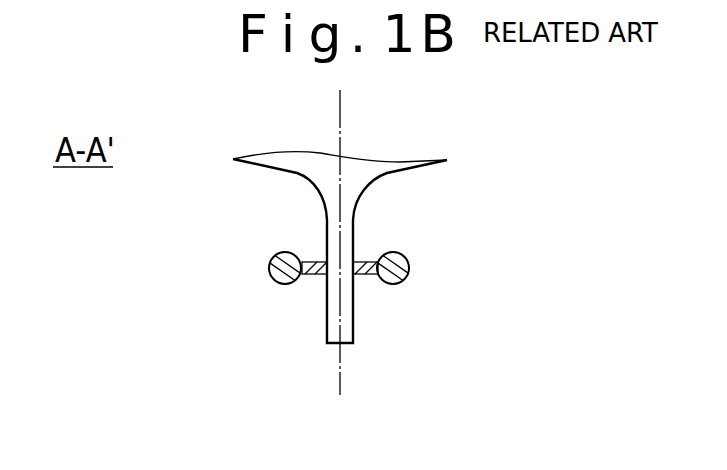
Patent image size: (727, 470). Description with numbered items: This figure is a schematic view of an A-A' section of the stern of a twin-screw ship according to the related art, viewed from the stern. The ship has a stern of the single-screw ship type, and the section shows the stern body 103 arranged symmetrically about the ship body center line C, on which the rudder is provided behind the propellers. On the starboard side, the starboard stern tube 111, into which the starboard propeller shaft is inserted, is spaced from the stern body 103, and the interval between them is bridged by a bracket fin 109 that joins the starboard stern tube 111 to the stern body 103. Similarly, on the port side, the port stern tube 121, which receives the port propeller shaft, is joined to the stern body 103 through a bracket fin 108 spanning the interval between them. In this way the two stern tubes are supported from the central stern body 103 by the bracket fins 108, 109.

The ship body center line C is at (337, 117).
The stern body 103 is at (377, 162).
The bracket fin 108 is at (317, 262).
The bracket fin 109 is at (363, 263).
The port stern tube 121 is at (268, 268).
The starboard stern tube 111 is at (410, 268).